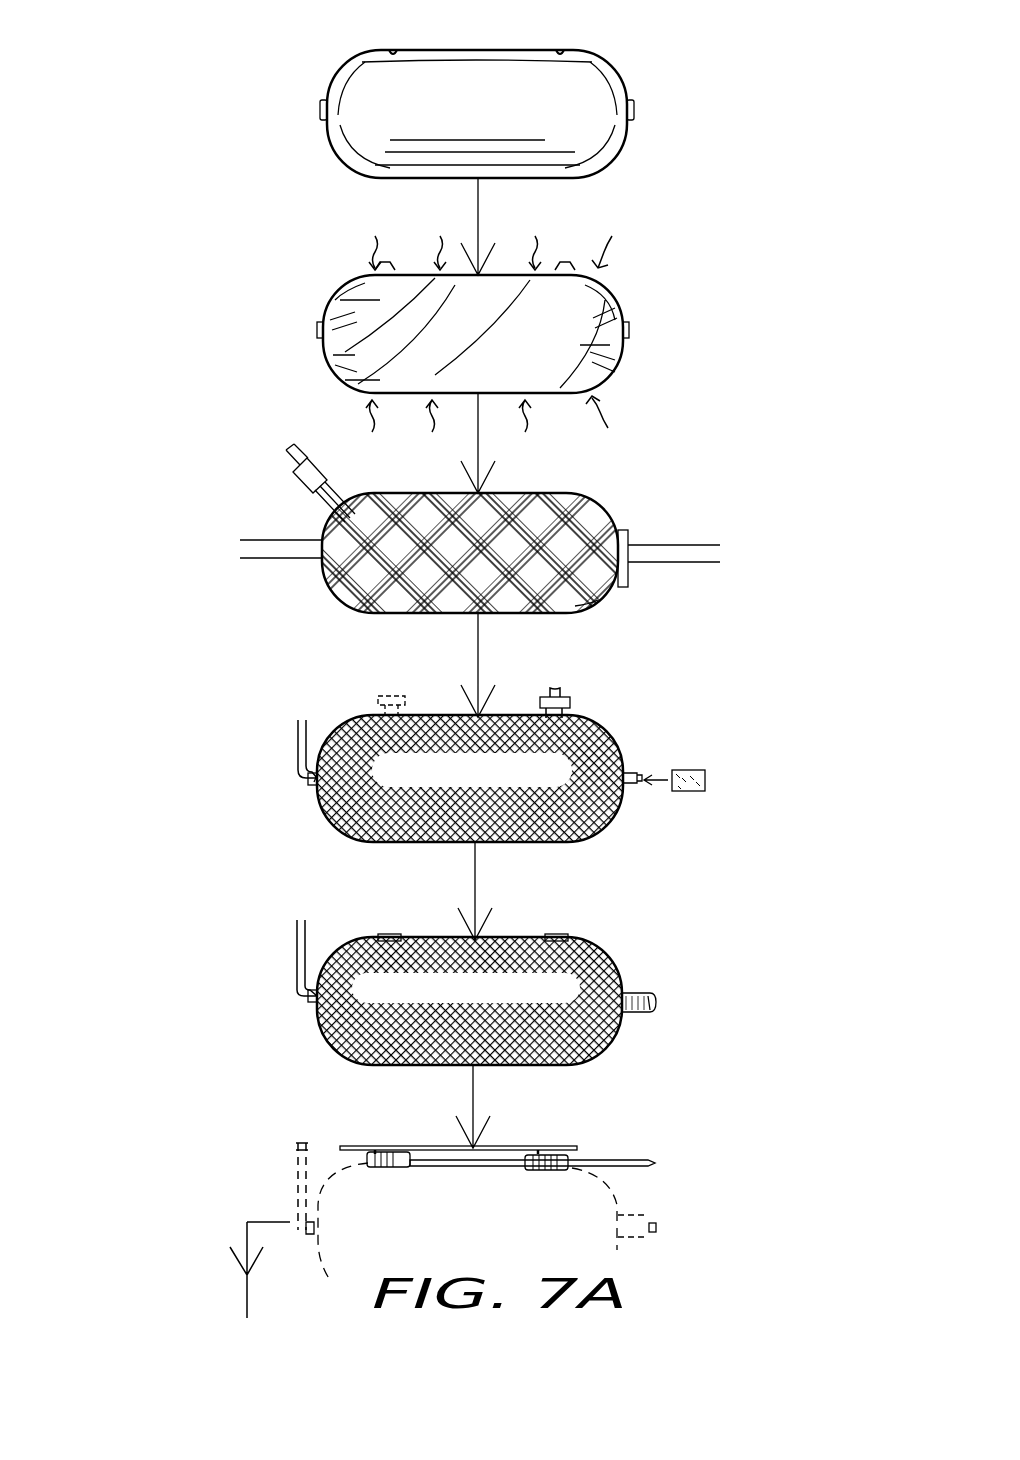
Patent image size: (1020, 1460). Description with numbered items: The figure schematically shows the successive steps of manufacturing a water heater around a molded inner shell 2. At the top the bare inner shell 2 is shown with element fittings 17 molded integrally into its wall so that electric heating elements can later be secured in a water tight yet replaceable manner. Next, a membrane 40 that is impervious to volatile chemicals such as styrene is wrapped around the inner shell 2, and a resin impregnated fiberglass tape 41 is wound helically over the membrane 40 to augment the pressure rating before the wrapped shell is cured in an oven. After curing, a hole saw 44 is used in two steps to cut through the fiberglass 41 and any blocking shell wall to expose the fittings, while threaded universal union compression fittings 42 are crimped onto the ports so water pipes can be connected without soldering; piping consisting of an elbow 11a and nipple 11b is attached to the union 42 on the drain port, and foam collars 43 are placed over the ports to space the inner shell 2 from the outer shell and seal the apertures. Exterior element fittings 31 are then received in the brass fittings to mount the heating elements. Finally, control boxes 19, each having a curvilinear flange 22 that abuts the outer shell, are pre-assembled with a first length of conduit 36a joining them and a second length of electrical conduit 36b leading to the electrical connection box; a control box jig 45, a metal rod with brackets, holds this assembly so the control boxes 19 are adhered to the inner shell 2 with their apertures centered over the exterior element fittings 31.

The inner shell 2 is at (615, 160).
The element fitting 17 is at (393, 50).
The membrane 40 is at (340, 300).
The resin impregnated fiberglass tape 41 is at (322, 504).
The hole saw 44 is at (378, 698).
The elbow 11a is at (310, 782).
The nipple 11b is at (298, 740).
The universal union compression fitting 42 is at (316, 790).
The foam collar 43 is at (698, 792).
The exterior element fitting 31 is at (383, 934).
The first length of conduit 36a is at (430, 1160).
The second length of electrical conduit 36b is at (615, 1160).
The flange 22 is at (535, 1150).
The control box 19 is at (395, 1168).
The control box jig 45 is at (342, 1148).